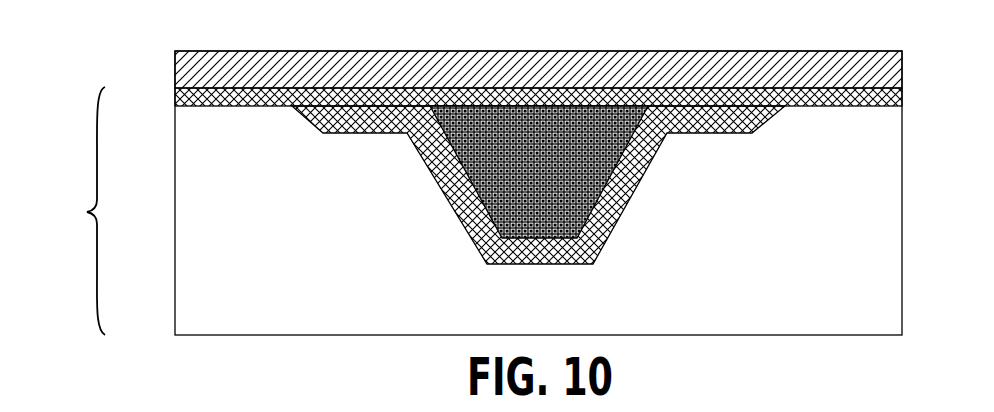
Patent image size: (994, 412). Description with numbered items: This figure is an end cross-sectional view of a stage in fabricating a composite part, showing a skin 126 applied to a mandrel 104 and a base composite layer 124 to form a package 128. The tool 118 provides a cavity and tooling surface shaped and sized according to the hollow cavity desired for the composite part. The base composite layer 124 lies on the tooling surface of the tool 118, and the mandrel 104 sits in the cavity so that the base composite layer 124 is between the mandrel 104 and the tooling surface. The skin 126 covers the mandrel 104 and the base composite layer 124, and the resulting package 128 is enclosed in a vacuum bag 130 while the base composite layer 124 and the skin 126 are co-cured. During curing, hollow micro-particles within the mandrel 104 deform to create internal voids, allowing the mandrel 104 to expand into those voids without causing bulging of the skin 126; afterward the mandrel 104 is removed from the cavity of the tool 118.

The mandrel 104 is at (508, 110).
The tool 118 is at (176, 210).
The base composite layer 124 is at (393, 110).
The skin 126 is at (308, 97).
The package 128 is at (78, 211).
The vacuum bag 130 is at (202, 48).